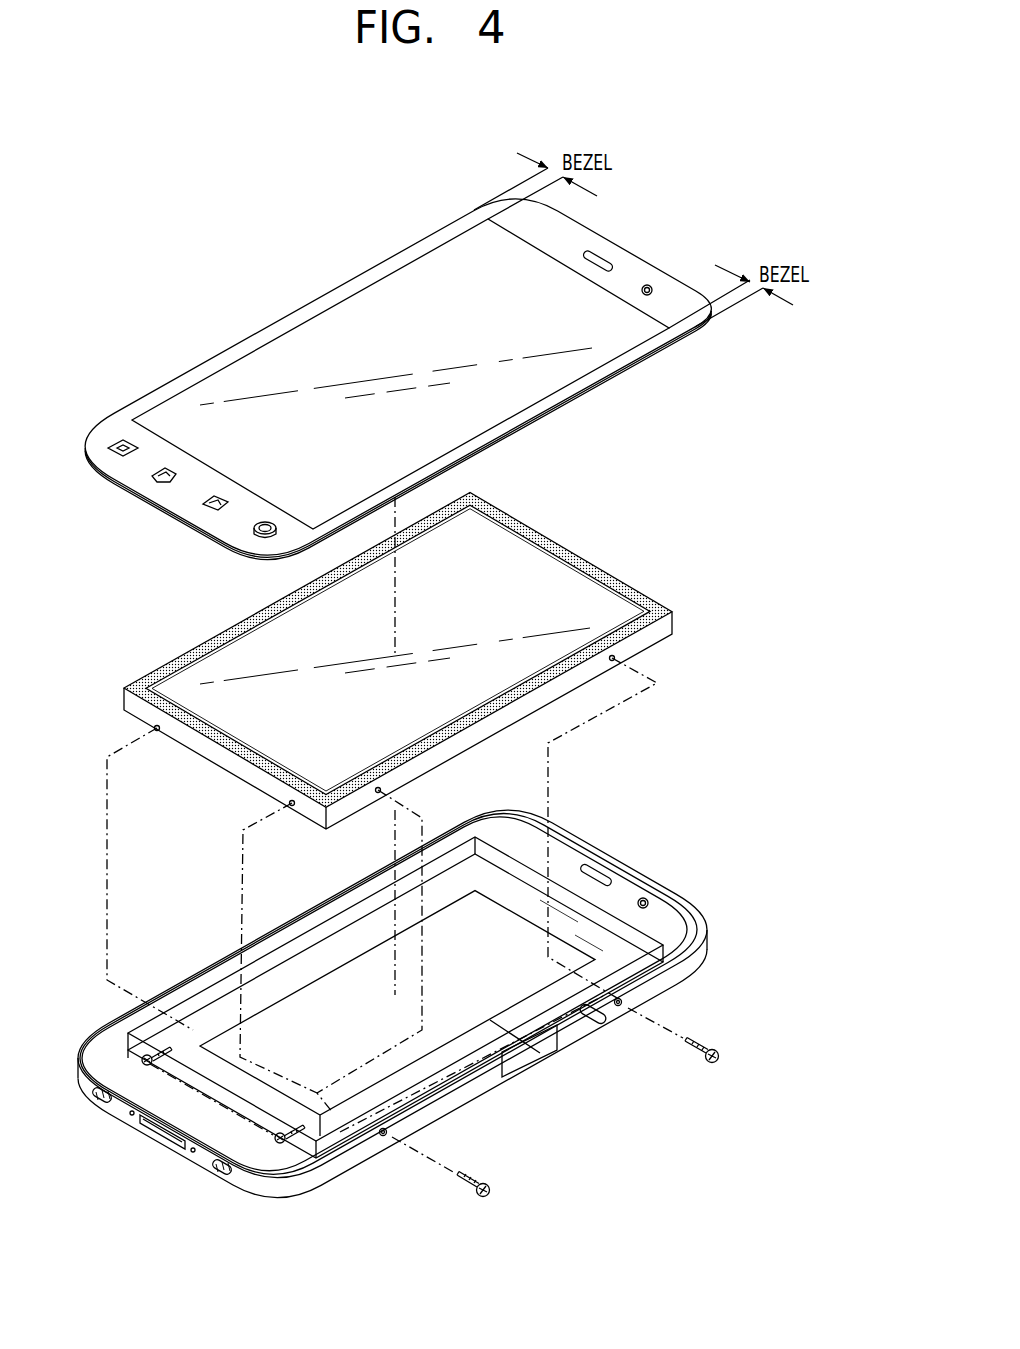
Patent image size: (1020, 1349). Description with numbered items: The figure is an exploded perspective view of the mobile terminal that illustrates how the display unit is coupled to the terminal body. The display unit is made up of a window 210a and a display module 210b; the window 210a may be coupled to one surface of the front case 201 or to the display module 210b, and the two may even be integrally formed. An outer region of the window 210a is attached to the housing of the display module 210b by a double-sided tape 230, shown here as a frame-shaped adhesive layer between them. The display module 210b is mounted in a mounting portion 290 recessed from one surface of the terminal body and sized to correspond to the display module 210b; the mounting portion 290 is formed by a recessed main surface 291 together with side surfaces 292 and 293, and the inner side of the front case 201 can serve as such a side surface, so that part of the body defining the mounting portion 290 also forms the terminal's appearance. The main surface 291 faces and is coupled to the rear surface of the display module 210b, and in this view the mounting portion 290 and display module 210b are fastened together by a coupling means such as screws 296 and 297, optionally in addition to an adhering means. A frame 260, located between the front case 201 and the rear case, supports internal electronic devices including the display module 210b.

The front case 201 is at (703, 948).
The window 210a is at (617, 255).
The display module 210b is at (665, 628).
The double-sided tape 230 is at (563, 549).
The frame 260 is at (540, 1053).
The mounting portion 290 is at (735, 848).
The main surface 291 is at (603, 938).
The side surface 292 is at (560, 900).
The side surface 293 is at (578, 930).
The screw 296 is at (283, 1143).
The screw 297 is at (490, 1194).